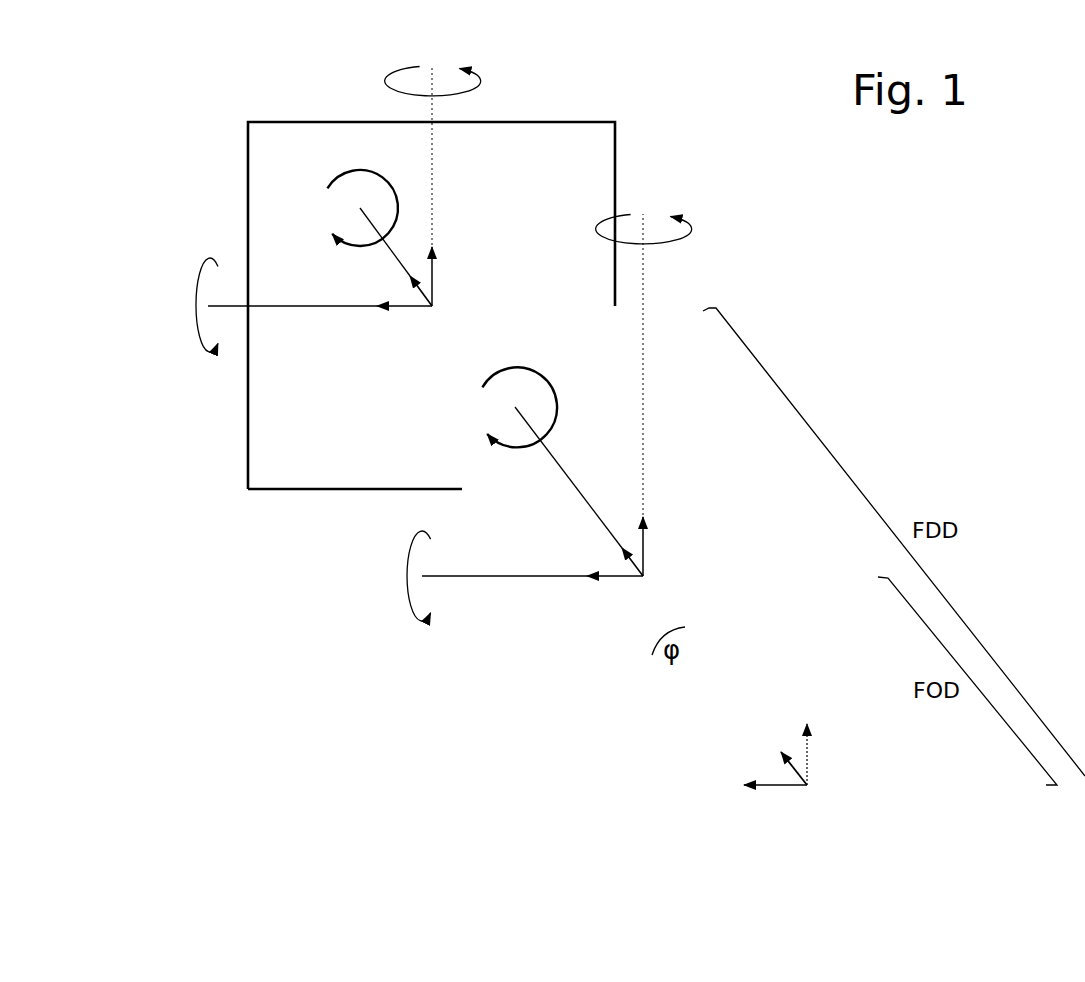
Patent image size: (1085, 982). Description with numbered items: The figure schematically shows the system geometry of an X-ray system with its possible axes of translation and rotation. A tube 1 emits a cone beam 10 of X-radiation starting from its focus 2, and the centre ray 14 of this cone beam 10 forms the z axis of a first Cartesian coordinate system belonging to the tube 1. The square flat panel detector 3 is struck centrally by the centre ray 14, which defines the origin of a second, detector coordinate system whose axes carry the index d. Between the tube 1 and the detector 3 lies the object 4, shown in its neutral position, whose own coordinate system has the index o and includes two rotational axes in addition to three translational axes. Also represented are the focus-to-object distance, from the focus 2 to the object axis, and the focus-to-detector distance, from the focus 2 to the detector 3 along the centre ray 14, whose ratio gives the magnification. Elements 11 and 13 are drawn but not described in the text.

The tube 1 is at (834, 798).
The focus 2 is at (807, 788).
The detector 3 is at (528, 152).
The object 4 is at (661, 569).
The cone beam 10 is at (733, 706).
The central ray 11 is at (662, 600).
The detector plane 13 is at (362, 403).
The centre ray 14 is at (472, 355).